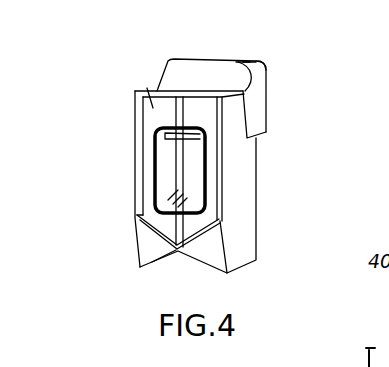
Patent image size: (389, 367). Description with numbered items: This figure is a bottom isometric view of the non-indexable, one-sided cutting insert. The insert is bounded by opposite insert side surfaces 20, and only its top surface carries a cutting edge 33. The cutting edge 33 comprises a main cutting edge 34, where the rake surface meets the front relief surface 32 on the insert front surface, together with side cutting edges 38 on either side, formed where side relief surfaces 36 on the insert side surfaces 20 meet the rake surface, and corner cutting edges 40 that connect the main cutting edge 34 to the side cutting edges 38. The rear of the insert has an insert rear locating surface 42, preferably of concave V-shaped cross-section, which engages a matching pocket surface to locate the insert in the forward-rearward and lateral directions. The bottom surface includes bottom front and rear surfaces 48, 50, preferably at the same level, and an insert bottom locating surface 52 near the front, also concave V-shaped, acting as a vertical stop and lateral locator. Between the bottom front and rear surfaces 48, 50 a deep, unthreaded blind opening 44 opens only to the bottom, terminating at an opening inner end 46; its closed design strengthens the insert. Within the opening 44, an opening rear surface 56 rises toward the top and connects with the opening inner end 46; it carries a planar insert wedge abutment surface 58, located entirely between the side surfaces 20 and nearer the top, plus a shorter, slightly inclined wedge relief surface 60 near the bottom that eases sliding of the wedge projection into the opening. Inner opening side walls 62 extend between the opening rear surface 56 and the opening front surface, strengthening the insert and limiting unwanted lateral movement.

The insert side surfaces 20 is at (243, 212).
The front relief surface 32 is at (180, 64).
The cutting edge 33 is at (247, 61).
The main cutting edge 34 is at (243, 55).
The side relief surfaces 36 is at (256, 103).
The side cutting edges 38 is at (266, 88).
The corner cutting edges 40 is at (267, 63).
The insert rear locating surface 42 is at (157, 264).
The blind opening 44 is at (207, 165).
The opening inner end 46 is at (206, 183).
The bottom front surface 48 is at (140, 127).
The bottom rear surface 50 is at (155, 230).
The insert bottom locating surface 52 is at (147, 88).
The opening rear surface 56 is at (165, 193).
The insert wedge abutment surface 58 is at (172, 153).
The wedge relief surface 60 is at (223, 218).
The inner opening side walls 62 is at (202, 158).